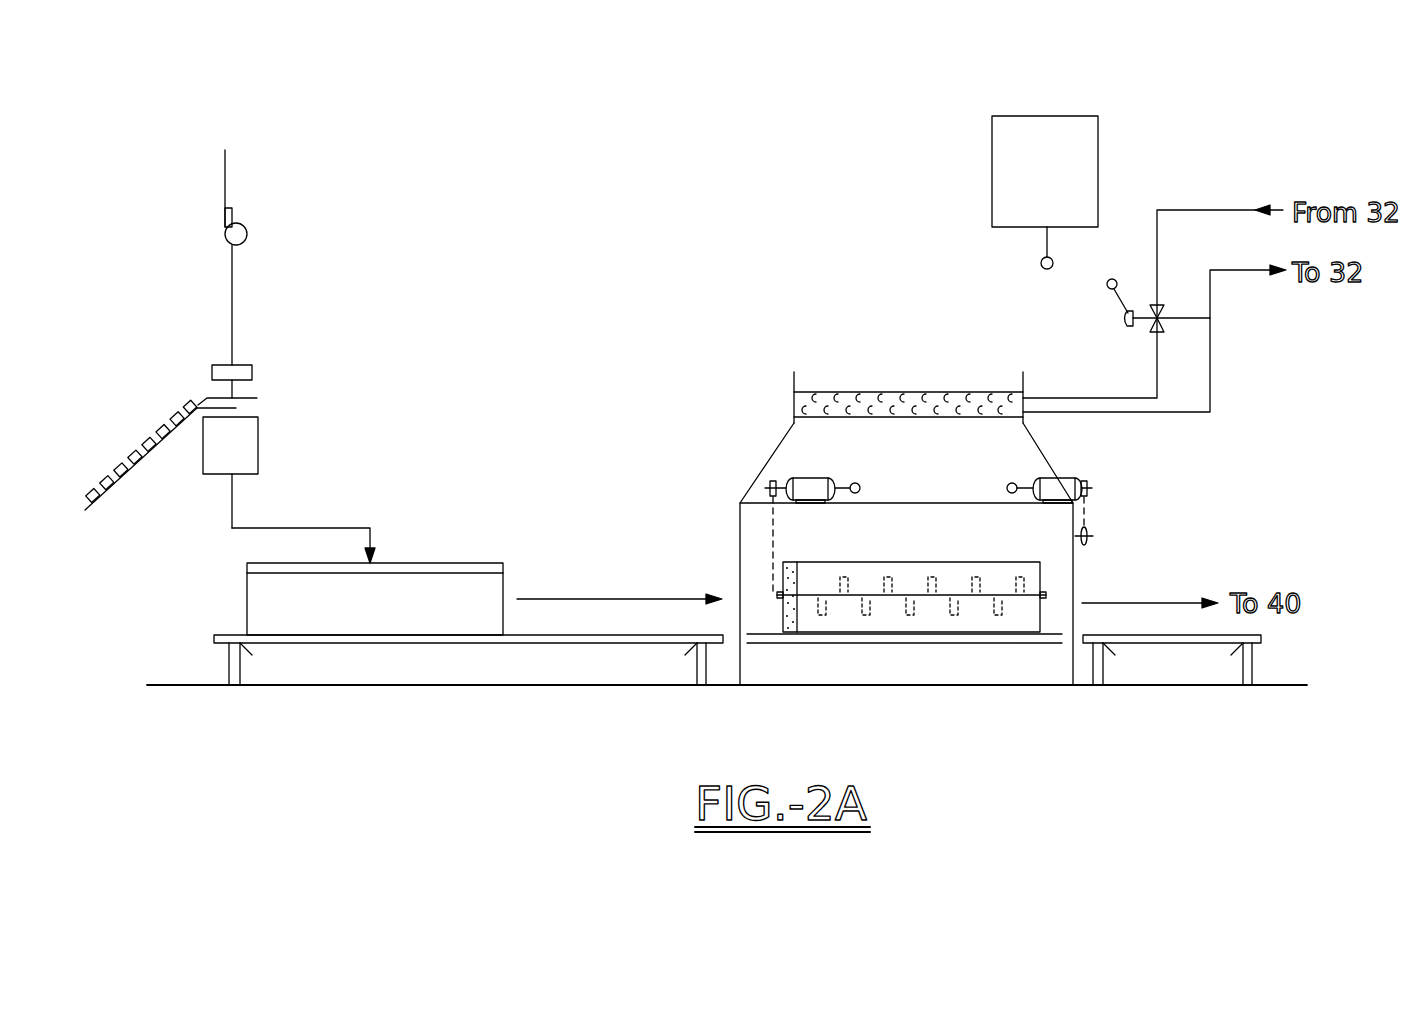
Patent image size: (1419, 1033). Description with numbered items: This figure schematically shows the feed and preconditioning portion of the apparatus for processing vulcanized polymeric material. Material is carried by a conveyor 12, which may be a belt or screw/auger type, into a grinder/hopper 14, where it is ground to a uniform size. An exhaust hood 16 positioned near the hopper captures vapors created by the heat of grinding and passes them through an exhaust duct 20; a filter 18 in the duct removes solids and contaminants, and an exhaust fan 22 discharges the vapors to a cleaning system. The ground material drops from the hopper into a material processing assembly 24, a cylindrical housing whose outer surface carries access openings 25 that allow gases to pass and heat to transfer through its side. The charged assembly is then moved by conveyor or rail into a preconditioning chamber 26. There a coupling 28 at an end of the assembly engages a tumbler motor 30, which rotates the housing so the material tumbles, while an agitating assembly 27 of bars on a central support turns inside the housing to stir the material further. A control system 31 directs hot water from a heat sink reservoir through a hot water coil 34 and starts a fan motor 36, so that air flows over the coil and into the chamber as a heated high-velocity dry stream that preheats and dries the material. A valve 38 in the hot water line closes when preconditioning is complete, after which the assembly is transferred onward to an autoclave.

The conveyor 12 is at (130, 472).
The grinder/hopper 14 is at (258, 450).
The exhaust hood 16 is at (257, 398).
The filter 18 is at (250, 372).
The exhaust duct 20 is at (232, 298).
The exhaust fan 22 is at (241, 232).
The material processing assembly 24 is at (443, 578).
The access openings 25 is at (792, 625).
The preconditioning chamber 26 is at (740, 538).
The agitating assembly 27 is at (957, 617).
The coupling 28 is at (740, 585).
The tumbler motor 30 is at (820, 482).
The control system 31 is at (992, 172).
The hot water coil 34 is at (905, 398).
The fan motor 36 is at (1043, 480).
The valve 38 is at (1127, 322).